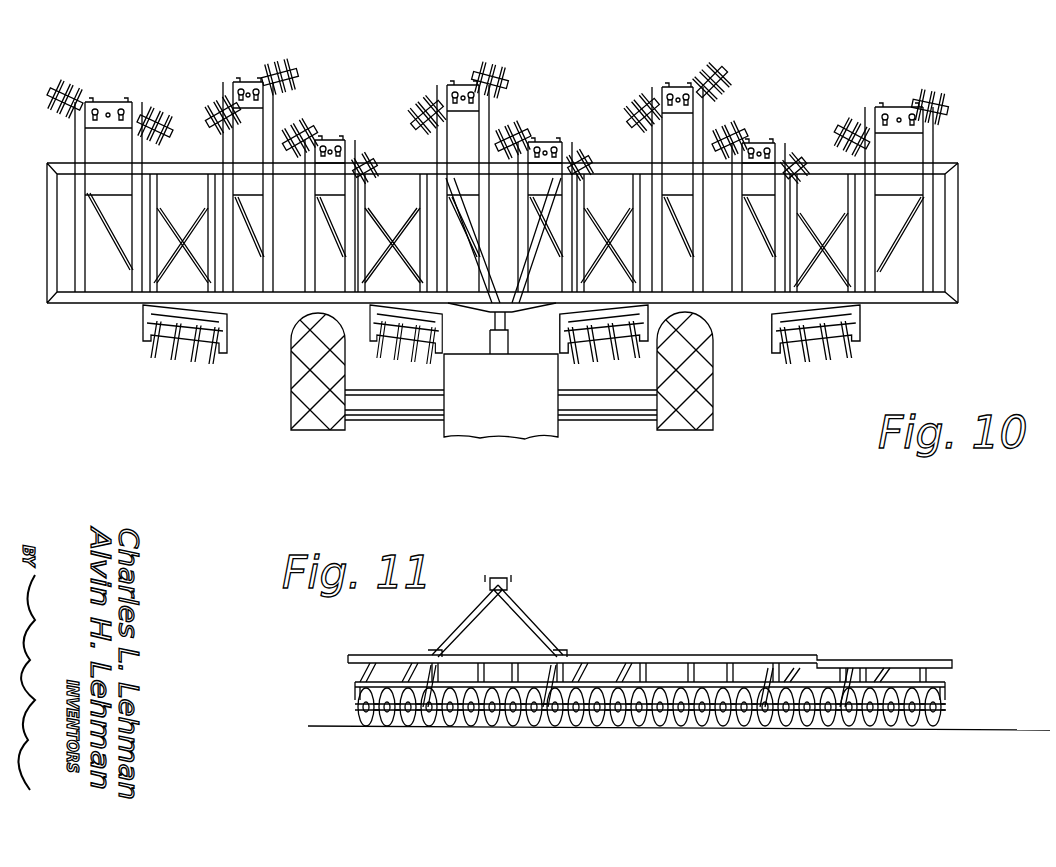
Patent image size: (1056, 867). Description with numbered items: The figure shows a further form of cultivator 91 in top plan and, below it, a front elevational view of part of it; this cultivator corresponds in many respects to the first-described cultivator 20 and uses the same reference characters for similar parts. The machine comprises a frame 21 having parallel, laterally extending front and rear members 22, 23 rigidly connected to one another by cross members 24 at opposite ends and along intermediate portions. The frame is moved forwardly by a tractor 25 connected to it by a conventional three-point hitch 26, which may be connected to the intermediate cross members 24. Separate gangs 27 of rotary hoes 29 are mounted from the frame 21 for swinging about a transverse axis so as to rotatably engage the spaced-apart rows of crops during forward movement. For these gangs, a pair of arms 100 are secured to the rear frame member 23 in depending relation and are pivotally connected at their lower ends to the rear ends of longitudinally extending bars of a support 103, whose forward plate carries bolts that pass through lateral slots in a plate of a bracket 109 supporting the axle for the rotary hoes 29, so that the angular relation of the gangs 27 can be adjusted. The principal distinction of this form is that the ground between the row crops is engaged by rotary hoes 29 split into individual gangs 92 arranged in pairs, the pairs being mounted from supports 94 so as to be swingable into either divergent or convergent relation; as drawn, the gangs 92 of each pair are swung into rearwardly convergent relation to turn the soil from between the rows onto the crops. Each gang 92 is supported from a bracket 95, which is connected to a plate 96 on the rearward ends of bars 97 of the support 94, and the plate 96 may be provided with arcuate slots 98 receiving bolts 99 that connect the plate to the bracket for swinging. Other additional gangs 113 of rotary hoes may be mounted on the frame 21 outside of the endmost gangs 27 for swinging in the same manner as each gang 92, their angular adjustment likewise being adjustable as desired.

In FIG. 10, the cultivator 20 is at (528, 222).
In FIG. 11, the cultivator 20 is at (650, 640).
In FIG. 10, the frame 21 is at (960, 195).
In FIG. 10, the front member 22 is at (905, 305).
In FIG. 11, the front member 22 is at (635, 655).
In FIG. 10, the rear member 23 is at (945, 168).
In FIG. 10, the cross members 24 is at (960, 268).
In FIG. 10, the tractor 25 is at (560, 437).
In FIG. 10, the three-point hitch 26 is at (520, 315).
In FIG. 11, the three-point hitch 26 is at (540, 620).
In FIG. 10, the gangs of rotary hoes 27 is at (190, 365).
In FIG. 11, the gangs of rotary hoes 27 is at (808, 730).
In FIG. 10, the rotary hoes 29 is at (738, 119).
In FIG. 11, the rotary hoes 29 is at (585, 730).
In FIG. 10, the cultivator 91 is at (388, 163).
In FIG. 11, the cultivator 91 is at (720, 655).
In FIG. 10, the gangs of rotary hoes 92 is at (706, 174).
In FIG. 11, the gangs of rotary hoes 92 is at (450, 730).
In FIG. 10, the supports 94 is at (648, 160).
In FIG. 11, the supports 94 is at (472, 668).
In FIG. 10, the bracket 95 is at (294, 66).
In FIG. 10, the plate 96 is at (253, 164).
In FIG. 10, the bars 97 is at (224, 187).
In FIG. 10, the arcuate slots 98 is at (264, 115).
In FIG. 10, the bolts 99 is at (210, 87).
In FIG. 10, the arms 100 is at (157, 193).
In FIG. 10, the support 103 is at (365, 248).
In FIG. 11, the support 103 is at (390, 655).
In FIG. 10, the bracket 109 is at (225, 345).
In FIG. 10, the additional gangs of rotary hoes 113 is at (120, 96).
In FIG. 11, the additional gangs of rotary hoes 113 is at (888, 730).